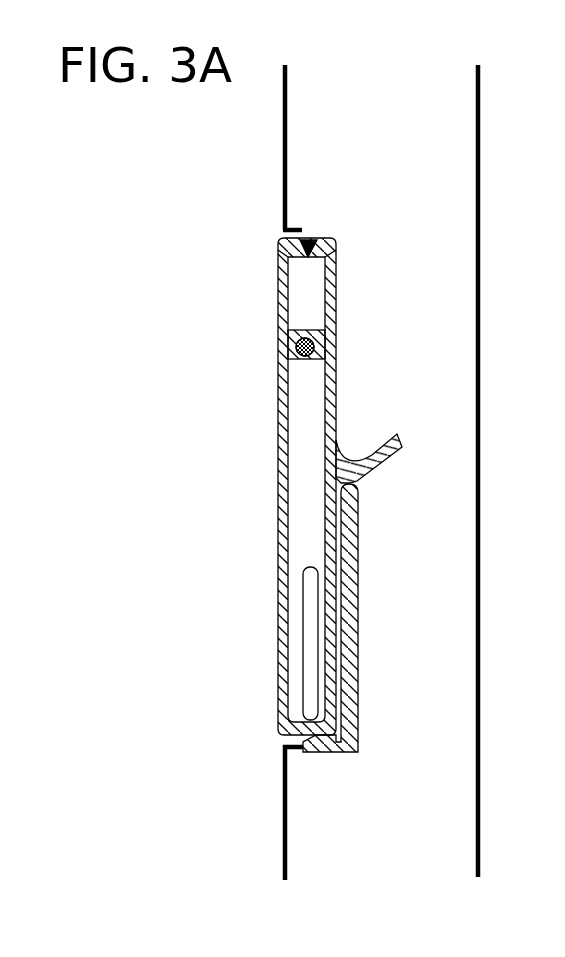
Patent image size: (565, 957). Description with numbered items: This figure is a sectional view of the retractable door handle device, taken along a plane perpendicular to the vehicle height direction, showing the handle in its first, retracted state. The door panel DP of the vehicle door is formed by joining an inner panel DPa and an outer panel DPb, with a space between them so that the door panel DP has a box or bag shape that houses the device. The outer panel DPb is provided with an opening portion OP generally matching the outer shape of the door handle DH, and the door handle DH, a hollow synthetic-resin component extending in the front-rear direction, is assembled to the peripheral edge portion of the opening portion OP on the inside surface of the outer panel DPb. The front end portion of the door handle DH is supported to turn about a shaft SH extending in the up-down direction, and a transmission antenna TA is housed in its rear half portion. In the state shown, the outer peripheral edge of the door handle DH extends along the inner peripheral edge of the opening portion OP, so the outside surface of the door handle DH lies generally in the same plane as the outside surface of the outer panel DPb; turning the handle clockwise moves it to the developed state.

The door panel DP is at (375, 461).
The inner panel DPa is at (480, 91).
The outer panel DPb is at (283, 790).
The opening portion OP is at (281, 235).
The door handle DH is at (277, 455).
The shaft SH is at (297, 350).
The transmission antenna TA is at (310, 613).